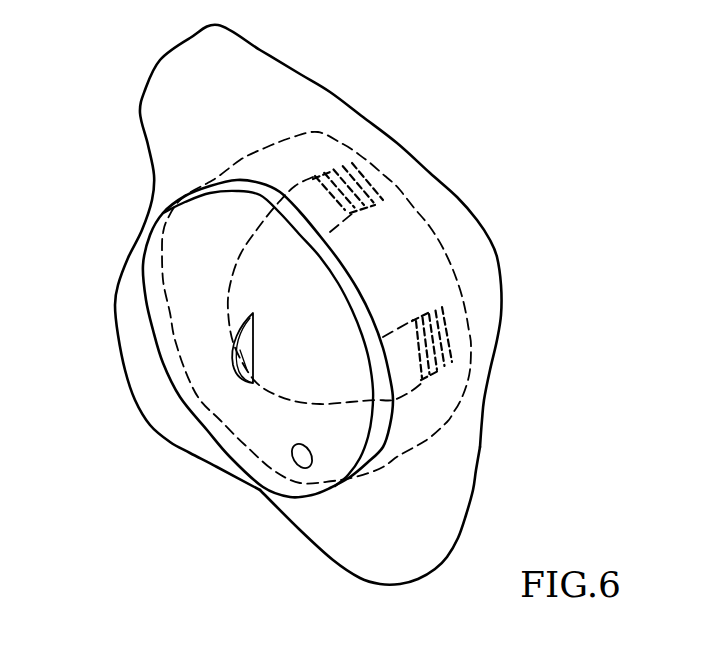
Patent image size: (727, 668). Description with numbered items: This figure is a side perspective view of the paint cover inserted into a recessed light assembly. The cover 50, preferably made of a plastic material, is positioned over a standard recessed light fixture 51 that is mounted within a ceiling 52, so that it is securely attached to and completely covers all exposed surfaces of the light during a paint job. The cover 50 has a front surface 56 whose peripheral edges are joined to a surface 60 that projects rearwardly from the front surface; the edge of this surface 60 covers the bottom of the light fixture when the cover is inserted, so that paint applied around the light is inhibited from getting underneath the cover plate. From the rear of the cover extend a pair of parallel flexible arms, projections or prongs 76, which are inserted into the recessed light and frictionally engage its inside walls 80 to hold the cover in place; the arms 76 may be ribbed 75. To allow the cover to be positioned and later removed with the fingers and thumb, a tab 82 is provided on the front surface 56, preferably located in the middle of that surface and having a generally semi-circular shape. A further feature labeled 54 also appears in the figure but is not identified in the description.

The cover 50 is at (307, 318).
The recessed light fixture 51 is at (413, 445).
The ceiling 52 is at (350, 533).
The aperture 54 is at (300, 462).
The front surface 56 is at (200, 320).
The surface 60 is at (217, 185).
The ribs 75 is at (433, 333).
The arms 76 is at (410, 388).
The inside walls 80 is at (274, 148).
The tab 82 is at (238, 381).